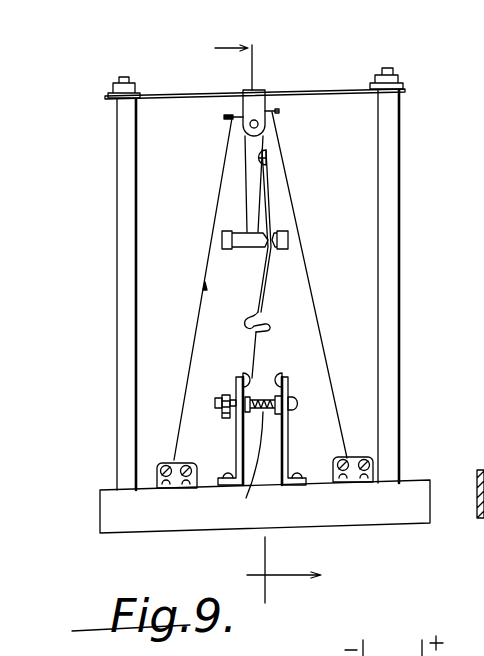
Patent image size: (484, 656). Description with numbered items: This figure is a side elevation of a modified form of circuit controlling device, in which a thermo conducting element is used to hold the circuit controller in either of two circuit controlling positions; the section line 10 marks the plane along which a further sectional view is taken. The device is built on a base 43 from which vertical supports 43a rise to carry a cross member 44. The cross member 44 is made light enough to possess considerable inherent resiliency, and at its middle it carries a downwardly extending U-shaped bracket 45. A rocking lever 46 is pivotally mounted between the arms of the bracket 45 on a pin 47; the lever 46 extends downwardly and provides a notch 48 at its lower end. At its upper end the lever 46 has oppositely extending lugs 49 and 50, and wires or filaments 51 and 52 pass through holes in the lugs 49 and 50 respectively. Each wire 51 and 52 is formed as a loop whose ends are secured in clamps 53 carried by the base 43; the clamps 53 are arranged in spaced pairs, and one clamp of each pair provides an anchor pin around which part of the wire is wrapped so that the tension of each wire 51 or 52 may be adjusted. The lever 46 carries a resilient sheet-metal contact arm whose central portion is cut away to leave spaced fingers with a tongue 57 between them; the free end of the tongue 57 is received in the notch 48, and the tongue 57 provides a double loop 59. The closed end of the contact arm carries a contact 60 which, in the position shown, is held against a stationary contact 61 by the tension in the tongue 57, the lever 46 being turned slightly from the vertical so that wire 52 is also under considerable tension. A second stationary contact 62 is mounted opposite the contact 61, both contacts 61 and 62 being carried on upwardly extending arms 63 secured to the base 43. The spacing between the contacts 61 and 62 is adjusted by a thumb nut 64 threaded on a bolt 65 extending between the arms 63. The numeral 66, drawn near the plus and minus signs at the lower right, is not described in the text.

The section line 10- 10 is at (268, 316).
The base 43 is at (382, 518).
The vertical supports 43a is at (128, 338).
The cross member 44 is at (315, 92).
The U-shaped bracket 45 is at (255, 105).
The rocking lever 46 is at (262, 147).
The pin 47 is at (250, 125).
The notch 48 is at (283, 233).
The lug 49 is at (232, 103).
The lug 50 is at (280, 108).
The wire 51 is at (215, 205).
The wire 52 is at (313, 270).
The clamps 53 is at (157, 463).
The tongue 57 is at (282, 285).
The double loop 59 is at (252, 323).
The contact 60 is at (253, 379).
The stationary contact 61 is at (237, 380).
The second stationary contact 62 is at (284, 378).
The upwardly extending arms 63 is at (237, 447).
The thumb nut 64 is at (227, 418).
The bolt 65 is at (246, 498).
The battery 66 is at (415, 652).